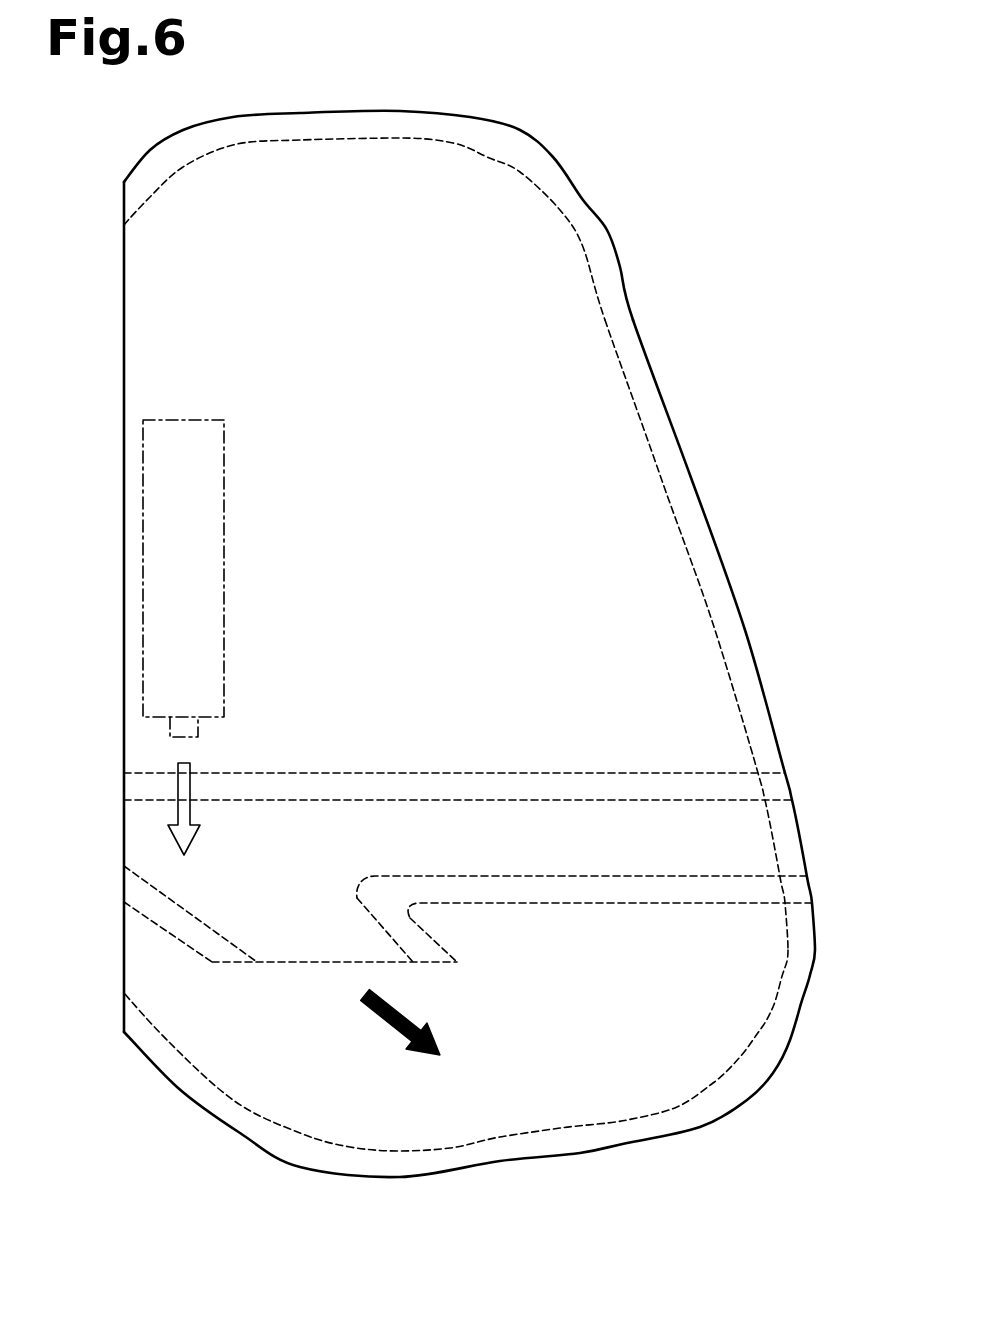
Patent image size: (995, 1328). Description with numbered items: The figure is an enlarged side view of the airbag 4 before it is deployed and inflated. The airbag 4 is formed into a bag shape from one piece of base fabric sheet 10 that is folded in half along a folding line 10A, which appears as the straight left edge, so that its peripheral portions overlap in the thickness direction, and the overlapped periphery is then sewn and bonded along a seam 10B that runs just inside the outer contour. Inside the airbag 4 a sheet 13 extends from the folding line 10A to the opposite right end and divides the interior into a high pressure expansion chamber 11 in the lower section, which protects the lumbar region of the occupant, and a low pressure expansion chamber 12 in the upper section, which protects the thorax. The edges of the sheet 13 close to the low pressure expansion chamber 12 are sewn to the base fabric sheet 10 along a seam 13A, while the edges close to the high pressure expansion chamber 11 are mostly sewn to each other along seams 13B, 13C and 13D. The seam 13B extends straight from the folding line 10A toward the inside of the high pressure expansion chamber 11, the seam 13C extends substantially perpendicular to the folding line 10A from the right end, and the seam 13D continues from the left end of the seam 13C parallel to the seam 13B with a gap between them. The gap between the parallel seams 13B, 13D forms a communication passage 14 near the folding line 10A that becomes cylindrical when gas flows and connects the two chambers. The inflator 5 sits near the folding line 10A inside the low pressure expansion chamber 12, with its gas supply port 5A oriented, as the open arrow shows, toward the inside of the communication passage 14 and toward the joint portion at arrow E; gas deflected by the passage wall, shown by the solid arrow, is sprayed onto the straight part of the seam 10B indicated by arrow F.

The airbag 4 is at (690, 308).
The inflator 5 is at (183, 420).
The gas supply port 5A is at (192, 737).
The base fabric sheet 10 is at (687, 452).
The folding line 10A is at (124, 608).
The seam 10B is at (557, 214).
The high pressure expansion chamber 11 is at (718, 1027).
The low pressure expansion chamber 12 is at (685, 600).
The sheet 13 is at (438, 772).
The seam 13A is at (503, 799).
The seam 13B is at (220, 935).
The seam 13C is at (590, 855).
The seam 13D is at (400, 948).
The communication passage 14 is at (312, 943).
The arrow E is at (186, 1072).
The arrow F is at (516, 1160).